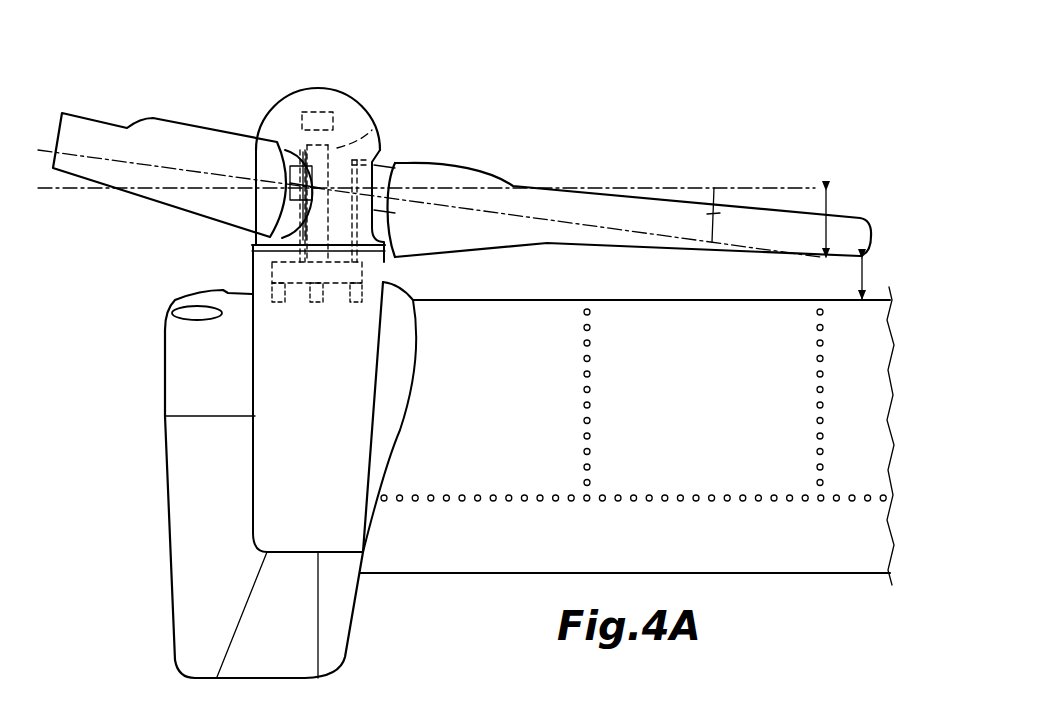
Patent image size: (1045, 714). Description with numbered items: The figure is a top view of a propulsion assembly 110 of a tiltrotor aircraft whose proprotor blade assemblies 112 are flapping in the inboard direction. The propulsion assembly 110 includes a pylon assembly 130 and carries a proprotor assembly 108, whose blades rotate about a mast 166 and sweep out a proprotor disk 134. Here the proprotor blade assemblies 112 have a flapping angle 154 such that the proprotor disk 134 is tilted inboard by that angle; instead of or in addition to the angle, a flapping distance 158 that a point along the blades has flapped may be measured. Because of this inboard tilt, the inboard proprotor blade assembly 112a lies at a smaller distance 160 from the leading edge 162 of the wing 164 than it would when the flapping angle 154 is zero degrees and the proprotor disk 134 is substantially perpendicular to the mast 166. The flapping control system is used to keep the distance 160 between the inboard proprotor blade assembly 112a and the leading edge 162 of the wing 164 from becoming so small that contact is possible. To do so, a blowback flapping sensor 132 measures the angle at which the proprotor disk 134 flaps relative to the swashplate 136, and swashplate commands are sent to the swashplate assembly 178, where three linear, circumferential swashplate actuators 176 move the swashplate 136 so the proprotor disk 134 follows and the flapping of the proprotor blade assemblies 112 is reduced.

The proprotor assembly 108 is at (360, 97).
The propulsion assembly 110 is at (162, 463).
The proprotor blade assemblies 112 is at (630, 207).
The inboard proprotor blade assembly 112a is at (613, 245).
The pylon assembly 130 is at (258, 513).
The blowback flapping sensor 132 is at (312, 110).
The proprotor disk 134 is at (90, 157).
The swashplate 136 is at (297, 300).
The flapping angle 154 is at (717, 197).
The flapping distance 158 is at (830, 208).
The distance 160 is at (863, 278).
The leading edge 162 is at (677, 297).
The wing 164 is at (697, 574).
The mast 166 is at (337, 148).
The swashplate actuators 176 is at (357, 303).
The swashplate assembly 178 is at (275, 272).